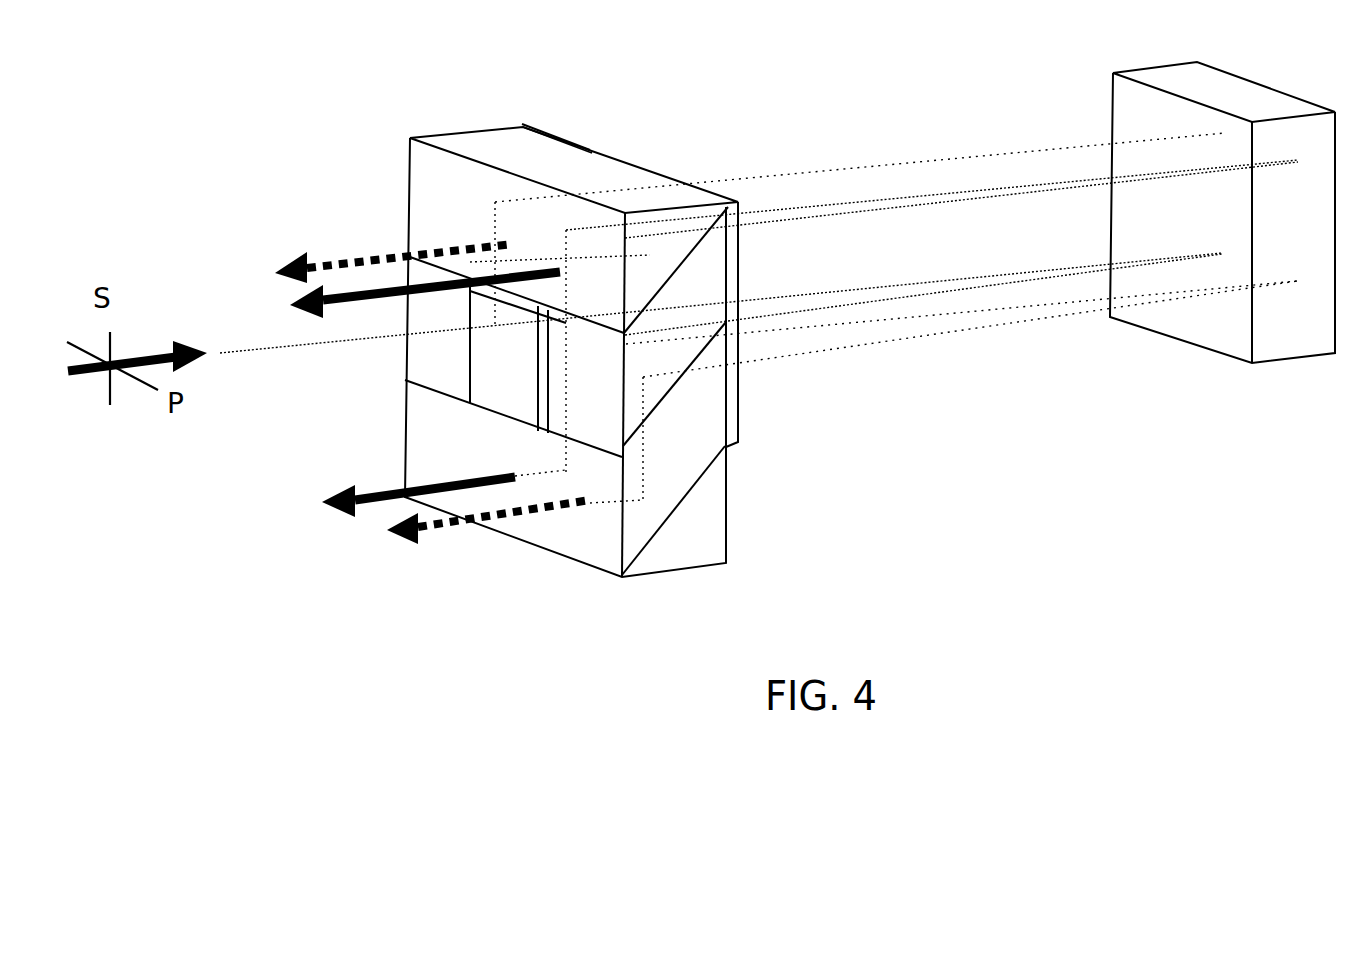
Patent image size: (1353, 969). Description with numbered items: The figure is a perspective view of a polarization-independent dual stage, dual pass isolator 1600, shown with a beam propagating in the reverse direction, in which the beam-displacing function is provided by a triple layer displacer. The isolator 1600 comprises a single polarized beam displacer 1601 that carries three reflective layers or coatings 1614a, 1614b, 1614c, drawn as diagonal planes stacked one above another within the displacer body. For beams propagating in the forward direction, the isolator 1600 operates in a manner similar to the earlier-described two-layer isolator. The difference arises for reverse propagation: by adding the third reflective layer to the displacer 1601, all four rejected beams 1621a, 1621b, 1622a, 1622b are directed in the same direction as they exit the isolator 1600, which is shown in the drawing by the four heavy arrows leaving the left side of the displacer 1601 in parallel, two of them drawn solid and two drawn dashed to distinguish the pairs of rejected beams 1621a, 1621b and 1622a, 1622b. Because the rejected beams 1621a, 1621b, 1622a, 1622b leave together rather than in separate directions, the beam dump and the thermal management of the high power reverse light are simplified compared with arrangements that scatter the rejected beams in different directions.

The isolator 1600 is at (613, 640).
The polarized beam displacer 1601 is at (512, 140).
The reflective layer 1614a is at (680, 502).
The reflective layer 1614b is at (680, 388).
The reflective layer 1614c is at (698, 245).
The rejected beam 1621a is at (343, 497).
The rejected beam 1621b is at (344, 236).
The rejected beam 1622a is at (379, 304).
The rejected beam 1622b is at (480, 551).